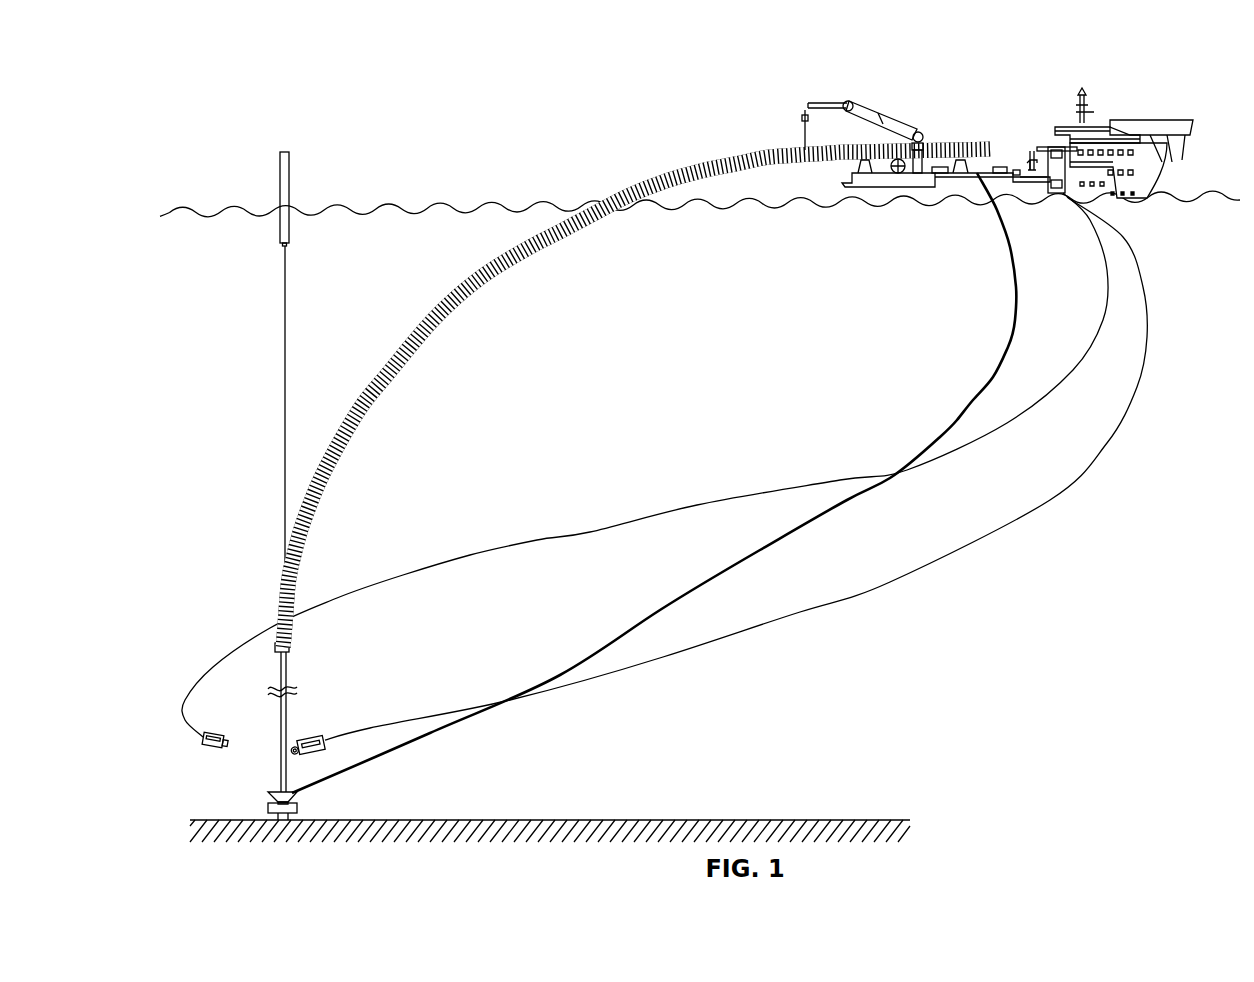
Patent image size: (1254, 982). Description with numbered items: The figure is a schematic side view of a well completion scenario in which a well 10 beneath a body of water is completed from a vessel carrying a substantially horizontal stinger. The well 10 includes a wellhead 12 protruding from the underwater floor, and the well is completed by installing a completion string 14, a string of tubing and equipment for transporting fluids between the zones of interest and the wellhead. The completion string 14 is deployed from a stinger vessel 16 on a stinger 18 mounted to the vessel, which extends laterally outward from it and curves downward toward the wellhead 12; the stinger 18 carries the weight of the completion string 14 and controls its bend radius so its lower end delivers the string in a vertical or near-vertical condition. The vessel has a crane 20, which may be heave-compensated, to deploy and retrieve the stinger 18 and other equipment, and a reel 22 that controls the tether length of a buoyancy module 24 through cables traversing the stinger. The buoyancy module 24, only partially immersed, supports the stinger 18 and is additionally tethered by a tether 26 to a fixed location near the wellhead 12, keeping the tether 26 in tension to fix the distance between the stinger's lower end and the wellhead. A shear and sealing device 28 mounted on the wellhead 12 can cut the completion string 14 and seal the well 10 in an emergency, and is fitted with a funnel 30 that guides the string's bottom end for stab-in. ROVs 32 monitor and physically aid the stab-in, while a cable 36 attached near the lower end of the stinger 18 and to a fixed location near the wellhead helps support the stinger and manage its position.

The well 10 is at (307, 818).
The wellhead 12 is at (276, 816).
The completion string 14 is at (280, 735).
The stinger vessel 16 is at (1153, 113).
The stinger 18 is at (433, 314).
The crane 20 is at (868, 111).
The reel 22 is at (886, 190).
The buoyancy module 24 is at (290, 183).
The tether 26 is at (288, 706).
The shear and sealing device 28 is at (303, 808).
The funnel 30 is at (276, 792).
The ROVs 32 is at (212, 734).
The cable 36 is at (848, 511).